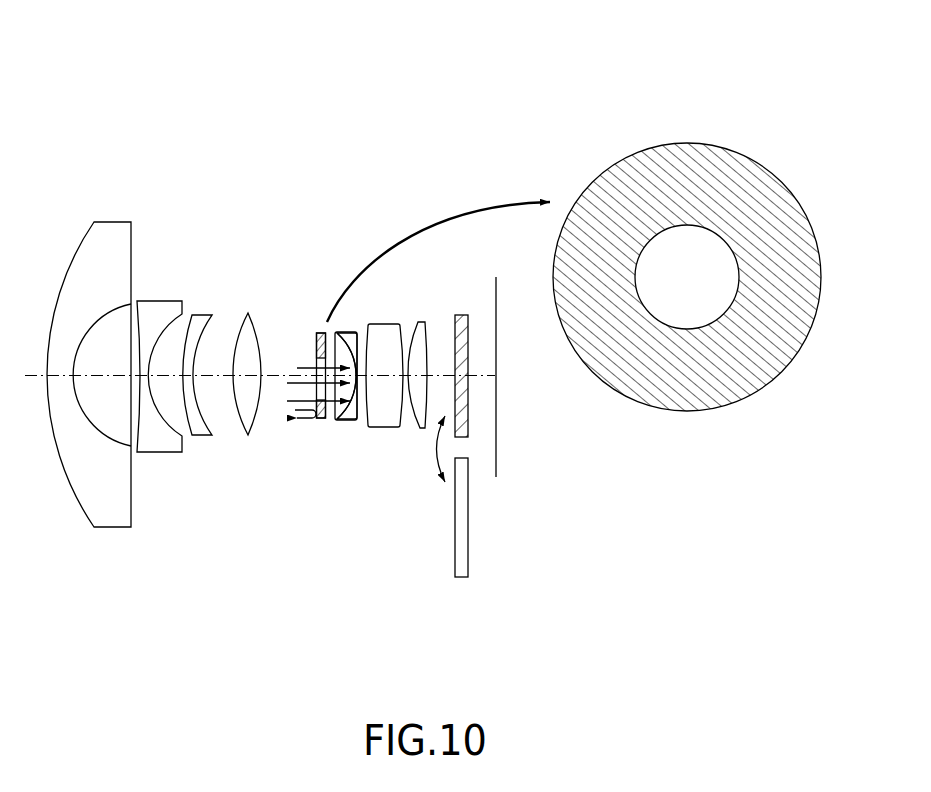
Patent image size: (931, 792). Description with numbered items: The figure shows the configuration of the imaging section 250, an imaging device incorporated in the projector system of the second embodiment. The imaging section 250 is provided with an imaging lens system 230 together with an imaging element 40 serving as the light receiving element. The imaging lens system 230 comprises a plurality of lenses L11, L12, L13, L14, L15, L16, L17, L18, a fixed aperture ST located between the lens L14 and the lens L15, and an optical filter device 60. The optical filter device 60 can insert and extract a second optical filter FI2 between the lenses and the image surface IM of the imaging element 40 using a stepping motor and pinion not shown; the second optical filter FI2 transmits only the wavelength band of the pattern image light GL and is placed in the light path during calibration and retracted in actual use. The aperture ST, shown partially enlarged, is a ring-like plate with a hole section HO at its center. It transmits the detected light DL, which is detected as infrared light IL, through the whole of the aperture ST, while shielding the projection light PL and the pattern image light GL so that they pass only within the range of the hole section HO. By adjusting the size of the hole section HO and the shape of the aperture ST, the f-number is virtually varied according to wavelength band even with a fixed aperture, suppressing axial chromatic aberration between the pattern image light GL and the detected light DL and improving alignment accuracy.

The imaging section 250 is at (359, 92).
The imaging lens system 230 is at (305, 240).
The lens L11 is at (103, 228).
The lens L12 is at (153, 307).
The lens L13 is at (200, 313).
The lens L14 is at (247, 310).
The lens L15 is at (336, 418).
The lens L16 is at (347, 422).
The lens L17 is at (384, 331).
The lens L18 is at (423, 325).
The aperture ST is at (320, 333).
The hole section HO is at (680, 236).
The detected light DL is at (287, 376).
The infrared light IL is at (248, 452).
The projection light PL is at (283, 400).
The pattern image light GL is at (280, 461).
The second optical filter FI2 is at (467, 323).
The optical filter device 60 is at (452, 585).
The image surface IM is at (530, 406).
The imaging element 40 is at (496, 478).